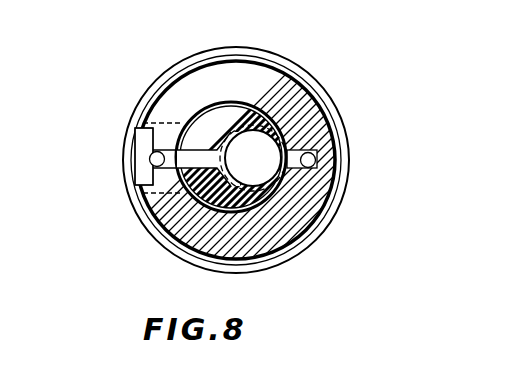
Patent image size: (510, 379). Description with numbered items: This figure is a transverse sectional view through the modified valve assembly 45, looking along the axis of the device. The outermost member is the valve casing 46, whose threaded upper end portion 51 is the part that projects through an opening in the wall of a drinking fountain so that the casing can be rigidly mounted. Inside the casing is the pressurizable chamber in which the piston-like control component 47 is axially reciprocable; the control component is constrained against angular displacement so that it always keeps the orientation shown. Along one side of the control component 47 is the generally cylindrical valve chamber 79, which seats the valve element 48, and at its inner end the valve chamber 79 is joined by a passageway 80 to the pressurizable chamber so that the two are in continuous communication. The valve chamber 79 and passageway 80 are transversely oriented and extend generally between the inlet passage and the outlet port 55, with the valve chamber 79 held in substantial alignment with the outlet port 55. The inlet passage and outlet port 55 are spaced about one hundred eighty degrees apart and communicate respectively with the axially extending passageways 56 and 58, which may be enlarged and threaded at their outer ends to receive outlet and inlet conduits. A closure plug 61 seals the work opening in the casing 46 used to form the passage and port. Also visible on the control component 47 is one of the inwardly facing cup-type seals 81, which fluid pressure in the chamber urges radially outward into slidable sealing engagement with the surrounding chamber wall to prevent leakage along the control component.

The valve assembly 45 is at (152, 55).
The valve casing 46 is at (131, 102).
The control component 47 is at (256, 94).
The valve element 48 is at (316, 113).
The threaded upper end portion 51 is at (158, 223).
The outlet port 55 is at (297, 131).
The passageway 56 is at (150, 159).
The passageway 58 is at (316, 160).
The closure plug 61 is at (140, 140).
The valve chamber 79 is at (272, 112).
The passageway 80 is at (165, 191).
The cup-type seal 81 is at (213, 97).